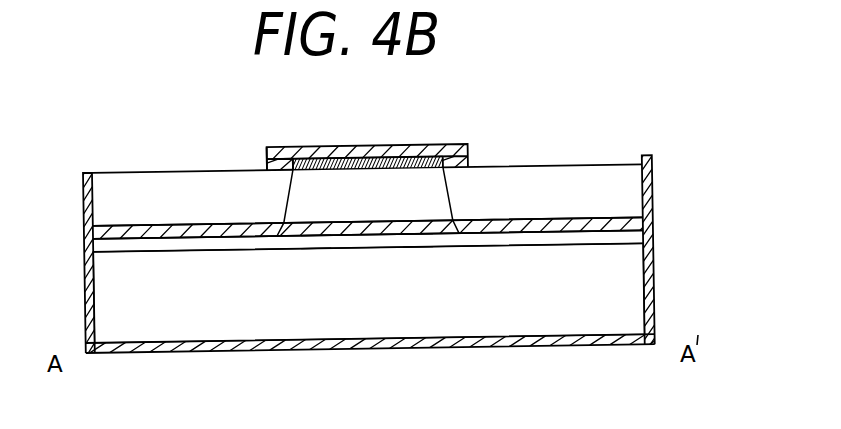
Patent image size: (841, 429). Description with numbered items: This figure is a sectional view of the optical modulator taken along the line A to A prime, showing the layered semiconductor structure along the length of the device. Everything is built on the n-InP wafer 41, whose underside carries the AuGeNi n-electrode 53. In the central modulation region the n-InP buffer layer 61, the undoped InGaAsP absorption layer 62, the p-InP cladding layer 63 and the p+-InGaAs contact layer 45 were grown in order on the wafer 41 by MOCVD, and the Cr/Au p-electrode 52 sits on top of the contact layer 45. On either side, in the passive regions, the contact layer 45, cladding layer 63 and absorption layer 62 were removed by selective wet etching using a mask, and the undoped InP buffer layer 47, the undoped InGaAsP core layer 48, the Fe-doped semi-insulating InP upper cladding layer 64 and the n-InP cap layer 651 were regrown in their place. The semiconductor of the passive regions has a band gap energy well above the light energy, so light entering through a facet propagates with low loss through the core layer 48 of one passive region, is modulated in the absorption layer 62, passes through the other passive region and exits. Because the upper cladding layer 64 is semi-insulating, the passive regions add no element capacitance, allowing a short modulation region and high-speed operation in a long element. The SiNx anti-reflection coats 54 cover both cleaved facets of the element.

The n-InP wafer 41 is at (623, 302).
The p+-InGaAs contact layer 45 is at (428, 160).
The undoped InP buffer layer 47 is at (633, 240).
The undoped InGaAsP core layer 48 is at (635, 223).
The Cr/Au p-electrode 52 is at (325, 149).
The AuGeNi n-electrode 53 is at (625, 343).
The SiNx anti-reflection coat 54 is at (647, 165).
The n-InP buffer layer 61 is at (315, 241).
The undoped InGaAsP absorption layer 62 is at (417, 238).
The p-InP cladding layer 63 is at (430, 197).
The Fe-doped semi-insulating InP upper cladding layer 64 is at (625, 186).
The n-InP cap layer 651 is at (276, 147).